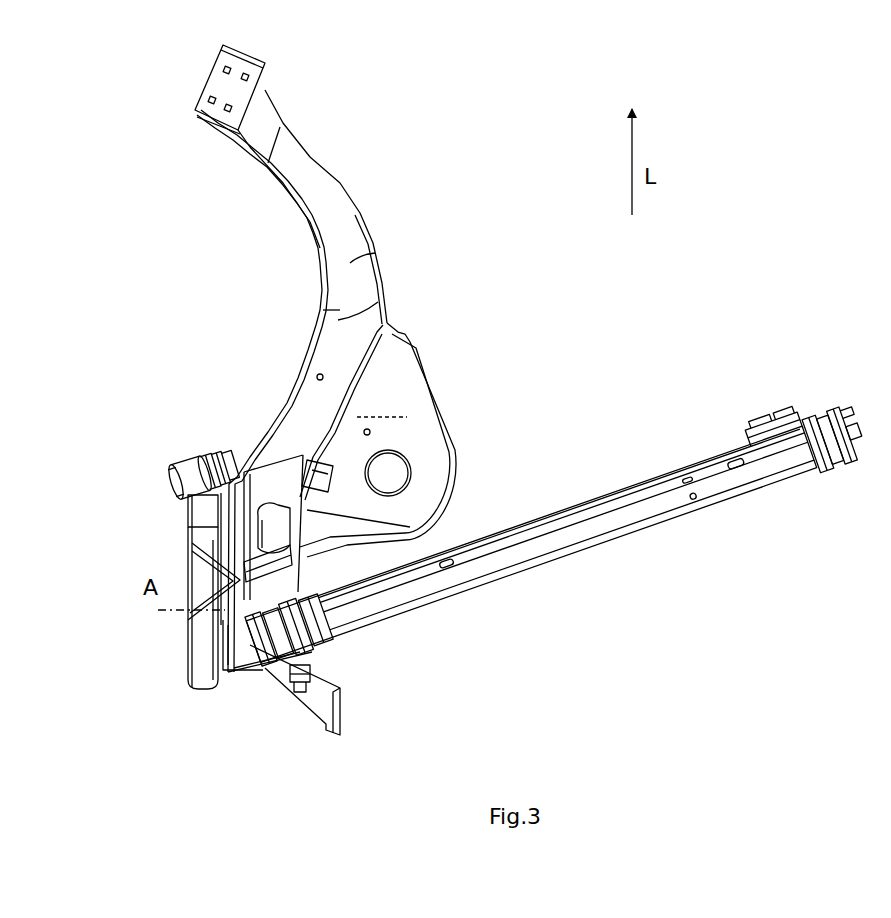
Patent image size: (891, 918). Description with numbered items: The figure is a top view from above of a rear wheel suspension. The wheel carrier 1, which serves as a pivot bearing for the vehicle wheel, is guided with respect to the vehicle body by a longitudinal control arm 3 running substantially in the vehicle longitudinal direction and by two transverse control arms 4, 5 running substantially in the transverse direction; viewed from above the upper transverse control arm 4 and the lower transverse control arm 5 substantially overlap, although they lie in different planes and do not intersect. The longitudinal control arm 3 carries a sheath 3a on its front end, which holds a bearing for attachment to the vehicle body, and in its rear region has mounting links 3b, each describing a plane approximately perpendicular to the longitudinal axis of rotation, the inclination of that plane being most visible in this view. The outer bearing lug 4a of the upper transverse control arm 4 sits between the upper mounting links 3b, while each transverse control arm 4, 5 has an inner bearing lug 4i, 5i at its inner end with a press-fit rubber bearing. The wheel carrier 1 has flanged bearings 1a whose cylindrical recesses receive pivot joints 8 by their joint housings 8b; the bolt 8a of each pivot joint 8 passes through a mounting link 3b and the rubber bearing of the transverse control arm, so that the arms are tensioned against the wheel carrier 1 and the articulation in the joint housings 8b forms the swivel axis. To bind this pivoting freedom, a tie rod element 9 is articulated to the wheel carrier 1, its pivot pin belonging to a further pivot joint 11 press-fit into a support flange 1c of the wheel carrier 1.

The wheel carrier 1 is at (184, 628).
The flanged bearing 1a is at (237, 581).
The support flange 1c is at (183, 511).
The longitudinal control arm 3 is at (333, 340).
The sheath 3a is at (234, 91).
The mounting link 3b is at (232, 634).
The upper transverse control arm 4 is at (564, 528).
The outer bearing lug 4a is at (318, 632).
The inner bearing lug 4i is at (837, 423).
The lower transverse control arm 5 is at (583, 502).
The inner bearing lug 5i is at (748, 434).
The pivot joint 8 is at (273, 527).
The joint housing 8b is at (262, 556).
The bolt 8a is at (303, 694).
The tie rod element 9 is at (230, 448).
The further pivot joint 11 is at (184, 466).